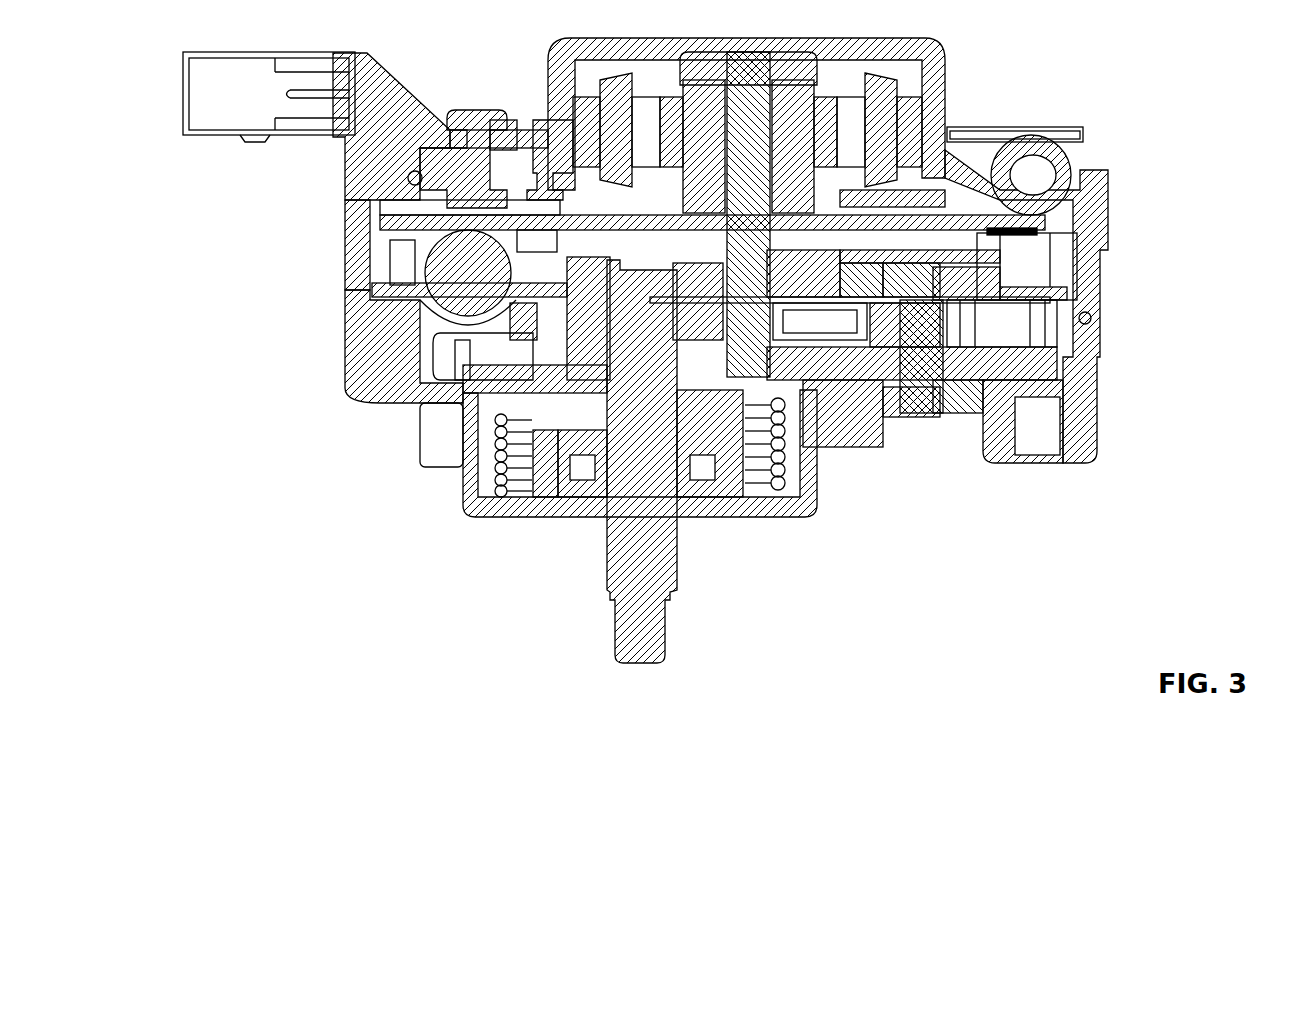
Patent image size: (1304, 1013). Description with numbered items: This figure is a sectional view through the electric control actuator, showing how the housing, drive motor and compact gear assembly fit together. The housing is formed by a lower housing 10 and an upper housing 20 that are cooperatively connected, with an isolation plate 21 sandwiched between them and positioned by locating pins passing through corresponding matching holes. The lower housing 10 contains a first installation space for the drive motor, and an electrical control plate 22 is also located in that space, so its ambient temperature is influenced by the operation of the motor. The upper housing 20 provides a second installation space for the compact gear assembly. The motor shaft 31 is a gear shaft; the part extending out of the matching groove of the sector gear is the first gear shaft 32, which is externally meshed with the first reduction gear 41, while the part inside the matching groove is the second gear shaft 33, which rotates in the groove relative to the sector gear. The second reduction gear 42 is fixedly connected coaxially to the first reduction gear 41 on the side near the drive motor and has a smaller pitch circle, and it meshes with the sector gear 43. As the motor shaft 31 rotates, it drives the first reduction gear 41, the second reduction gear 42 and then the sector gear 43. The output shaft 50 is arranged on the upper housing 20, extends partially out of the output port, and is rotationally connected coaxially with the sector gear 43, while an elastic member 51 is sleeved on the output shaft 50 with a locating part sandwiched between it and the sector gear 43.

The lower housing 10 is at (548, 55).
The upper housing 20 is at (463, 510).
The isolation plate 21 is at (383, 297).
The electrical control plate 22 is at (347, 228).
The motor shaft 31 is at (760, 150).
The first gear shaft 32 is at (757, 400).
The second gear shaft 33 is at (1091, 318).
The first reduction gear 41 is at (822, 367).
The second reduction gear 42 is at (923, 337).
The sector gear 43 is at (610, 323).
The output shaft 50 is at (447, 428).
The elastic member 51 is at (503, 487).